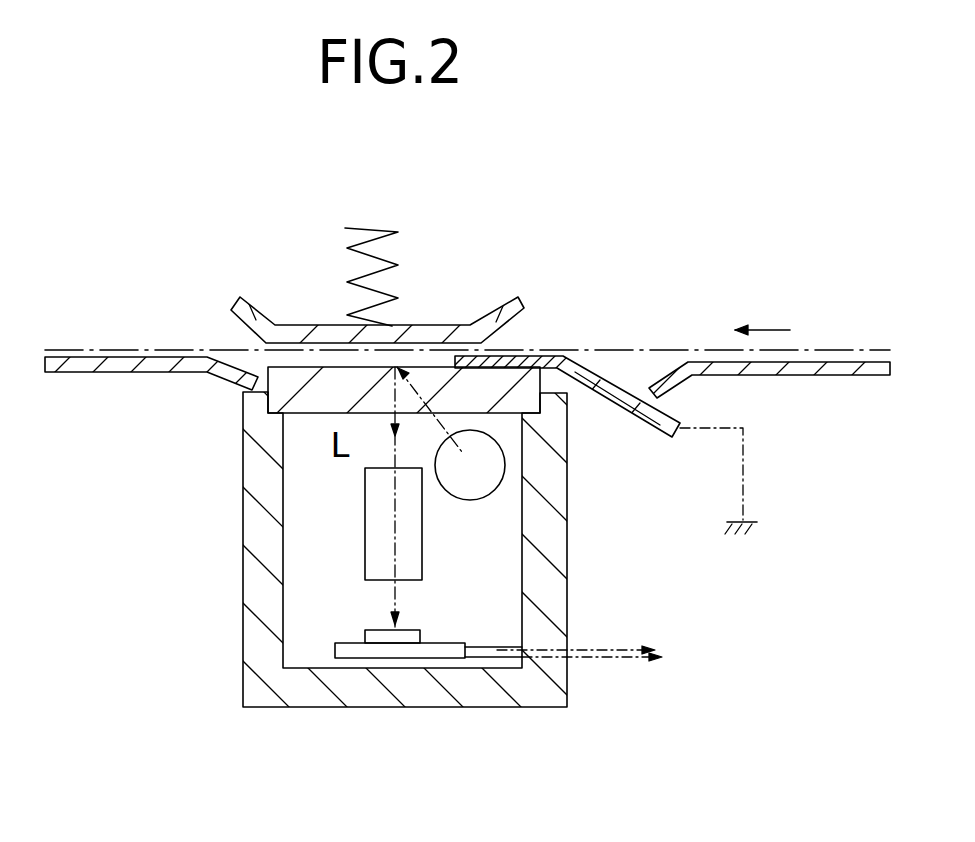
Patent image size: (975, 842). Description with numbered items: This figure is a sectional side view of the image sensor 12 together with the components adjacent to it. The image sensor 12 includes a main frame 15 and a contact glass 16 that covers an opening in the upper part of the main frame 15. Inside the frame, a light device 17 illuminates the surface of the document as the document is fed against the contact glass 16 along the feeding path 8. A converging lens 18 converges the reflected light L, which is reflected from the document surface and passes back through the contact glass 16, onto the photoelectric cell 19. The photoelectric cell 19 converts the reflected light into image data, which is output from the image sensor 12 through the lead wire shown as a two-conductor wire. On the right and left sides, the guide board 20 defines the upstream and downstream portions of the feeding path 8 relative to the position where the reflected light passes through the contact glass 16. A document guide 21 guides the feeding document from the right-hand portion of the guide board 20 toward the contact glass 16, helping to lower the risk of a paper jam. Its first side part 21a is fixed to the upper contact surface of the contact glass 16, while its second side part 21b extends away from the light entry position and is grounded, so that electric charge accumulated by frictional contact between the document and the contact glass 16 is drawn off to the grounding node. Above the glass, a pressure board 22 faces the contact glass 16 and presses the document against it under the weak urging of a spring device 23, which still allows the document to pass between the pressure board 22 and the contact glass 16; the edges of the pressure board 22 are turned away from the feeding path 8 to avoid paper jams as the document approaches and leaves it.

The feeding path 8 is at (657, 350).
The image sensor 12 is at (434, 592).
The main frame 15 is at (552, 698).
The contact glass 16 is at (320, 403).
The light device 17 is at (480, 490).
The converging lens 18 is at (375, 527).
The photoelectric cell 19 is at (387, 655).
The guide board 20 is at (73, 367).
The document guide 21 is at (633, 400).
The first side part 21a is at (507, 356).
The second side part 21b is at (668, 417).
The pressure board 22 is at (495, 313).
The spring device 23 is at (398, 252).